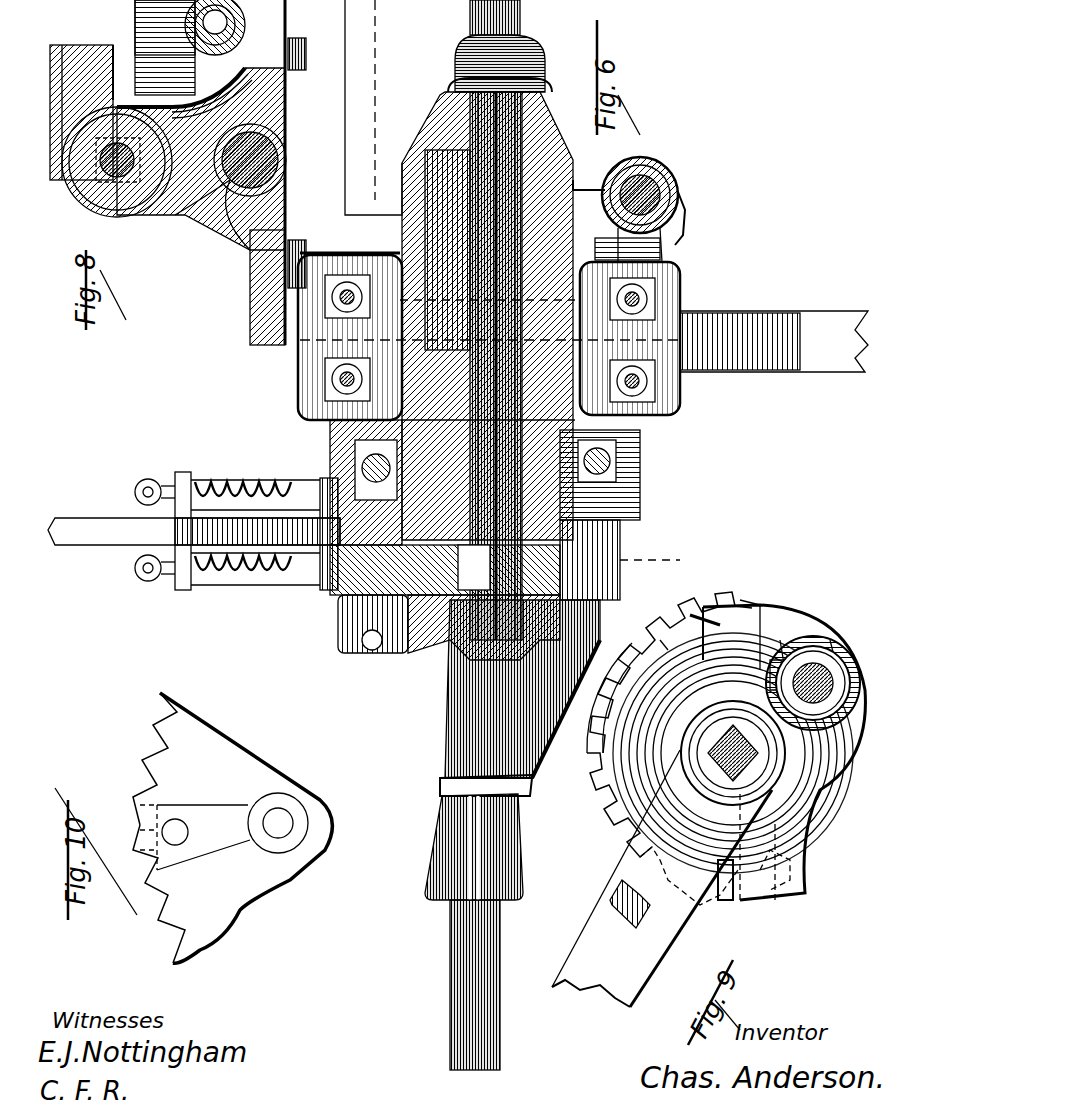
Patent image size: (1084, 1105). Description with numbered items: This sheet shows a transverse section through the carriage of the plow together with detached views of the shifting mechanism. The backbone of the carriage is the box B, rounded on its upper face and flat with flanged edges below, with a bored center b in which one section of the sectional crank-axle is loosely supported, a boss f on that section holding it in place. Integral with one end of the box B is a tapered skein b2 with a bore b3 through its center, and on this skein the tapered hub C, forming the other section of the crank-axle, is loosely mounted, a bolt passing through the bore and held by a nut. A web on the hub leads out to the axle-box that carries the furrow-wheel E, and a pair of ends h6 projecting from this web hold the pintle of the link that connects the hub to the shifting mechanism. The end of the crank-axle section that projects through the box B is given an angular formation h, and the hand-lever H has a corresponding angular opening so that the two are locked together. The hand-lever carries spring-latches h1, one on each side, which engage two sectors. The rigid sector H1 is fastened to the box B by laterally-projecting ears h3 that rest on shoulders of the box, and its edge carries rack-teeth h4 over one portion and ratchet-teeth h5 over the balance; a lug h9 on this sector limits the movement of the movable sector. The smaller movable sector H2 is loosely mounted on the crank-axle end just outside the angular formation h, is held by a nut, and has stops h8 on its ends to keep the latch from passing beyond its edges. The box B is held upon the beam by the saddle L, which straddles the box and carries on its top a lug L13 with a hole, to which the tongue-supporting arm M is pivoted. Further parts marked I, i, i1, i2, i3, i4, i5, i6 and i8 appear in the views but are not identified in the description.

In FIG. 6, the box B is at (435, 145).
In FIG. 6, the wheel E is at (445, 135).
In FIG. 6, the boss f is at (472, 355).
In FIG. 6, the bored center b is at (530, 115).
In FIG. 6, the tapered skein b2 is at (442, 780).
In FIG. 9, the tapered skein b2 is at (835, 655).
In FIG. 9, the bore b3 is at (805, 640).
In FIG. 6, the tapered hub C is at (512, 835).
In FIG. 6, the hand-lever H is at (85, 518).
In FIG. 9, the hand-lever H is at (662, 878).
In FIG. 6, the rigid sector H1 is at (355, 440).
In FIG. 9, the rigid sector H1 is at (720, 732).
In FIG. 6, the movable toothed sector H2 is at (340, 605).
In FIG. 10, the movable toothed sector H2 is at (236, 828).
In FIG. 6, the angular formation h is at (445, 570).
In FIG. 6, the spring-latches h1 is at (175, 480).
In FIG. 9, the spring-latches h1 is at (733, 760).
In FIG. 9, the laterally-projecting ears h3 is at (745, 603).
In FIG. 9, the rack-teeth h4 is at (668, 635).
In FIG. 9, the ratchet-teeth h5 is at (605, 838).
In FIG. 10, the ratchet-teeth h5 is at (170, 958).
In FIG. 6, the ends h6 is at (352, 470).
In FIG. 10, the stops h8 is at (158, 672).
In FIG. 6, the lug h9 is at (620, 545).
In FIG. 9, the lug h9 is at (705, 630).
In FIG. 6, the arm I is at (763, 372).
In FIG. 8, the bracket i is at (252, 290).
In FIG. 6, the clamp plate i1 is at (335, 275).
In FIG. 8, the lug i2 is at (295, 163).
In FIG. 8, the bolt i3 is at (197, 47).
In FIG. 6, the clamp bolts i4 is at (635, 390).
In FIG. 6, the eye i5 is at (605, 195).
In FIG. 6, the pin i6 is at (645, 160).
In FIG. 8, the pivot pin i8 is at (125, 105).
In FIG. 8, the saddle L is at (205, 225).
In FIG. 8, the lug L13 is at (120, 200).
In FIG. 8, the tongue-supporting arm M is at (62, 48).